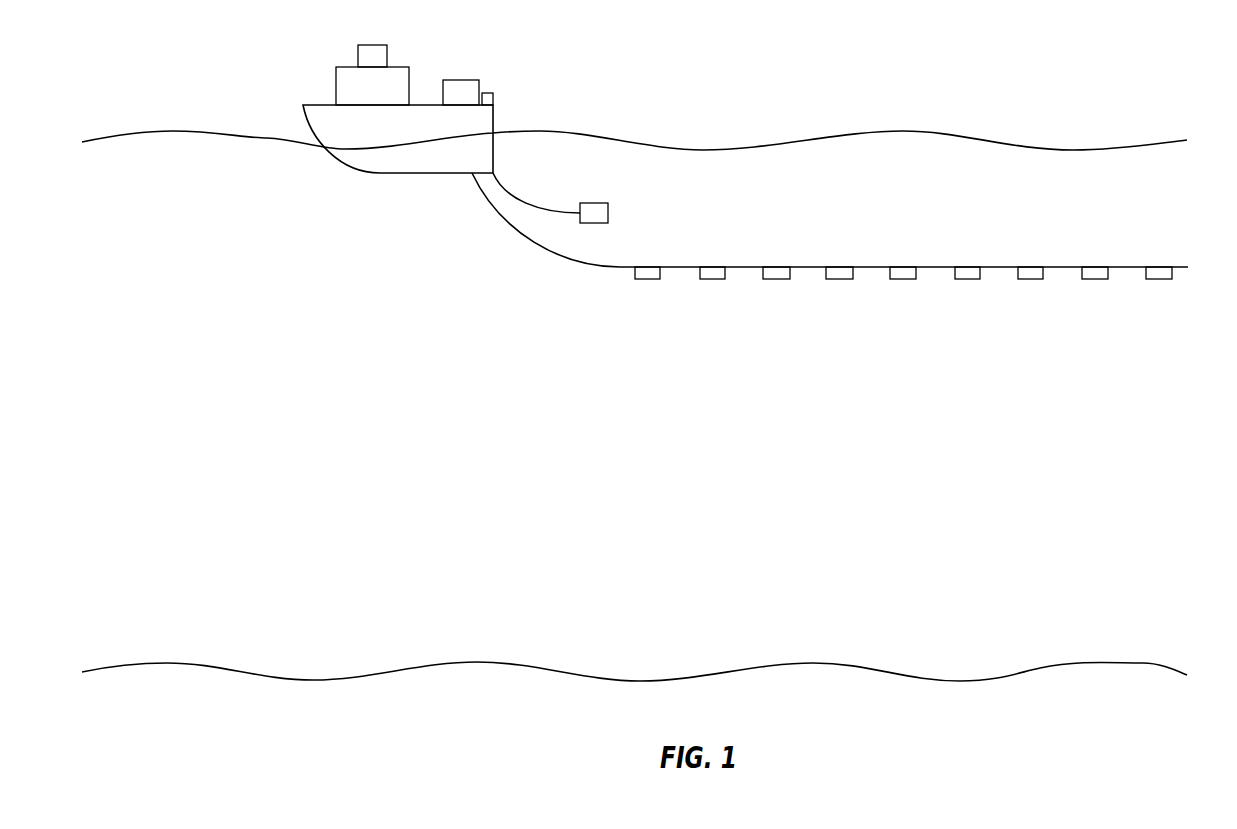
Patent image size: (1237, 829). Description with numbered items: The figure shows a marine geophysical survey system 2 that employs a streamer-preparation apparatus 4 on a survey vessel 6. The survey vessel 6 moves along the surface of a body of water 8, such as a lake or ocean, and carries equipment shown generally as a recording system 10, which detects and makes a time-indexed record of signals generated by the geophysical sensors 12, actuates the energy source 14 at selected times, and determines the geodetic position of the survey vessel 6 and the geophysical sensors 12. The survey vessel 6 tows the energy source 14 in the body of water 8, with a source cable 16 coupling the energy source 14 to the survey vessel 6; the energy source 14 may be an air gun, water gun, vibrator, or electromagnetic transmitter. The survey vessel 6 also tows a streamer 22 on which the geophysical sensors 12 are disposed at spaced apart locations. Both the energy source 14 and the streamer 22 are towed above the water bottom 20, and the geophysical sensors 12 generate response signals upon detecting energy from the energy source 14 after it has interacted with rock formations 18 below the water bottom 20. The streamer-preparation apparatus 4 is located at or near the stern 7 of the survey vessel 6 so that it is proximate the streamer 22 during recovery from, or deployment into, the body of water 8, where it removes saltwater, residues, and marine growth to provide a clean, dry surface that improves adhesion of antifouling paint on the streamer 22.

The marine geophysical survey system 2 is at (308, 208).
The streamer-preparation apparatus 4 is at (488, 93).
The survey vessel 6 is at (350, 66).
The stern 7 is at (496, 118).
The body of water 8 is at (290, 358).
The recording system 10 is at (462, 80).
The geophysical sensors 12 is at (712, 279).
The energy source 14 is at (608, 213).
The source cable 16 is at (525, 198).
The rock formations 18 is at (1124, 716).
The water bottom 20 is at (1127, 663).
The streamer 22 is at (808, 267).